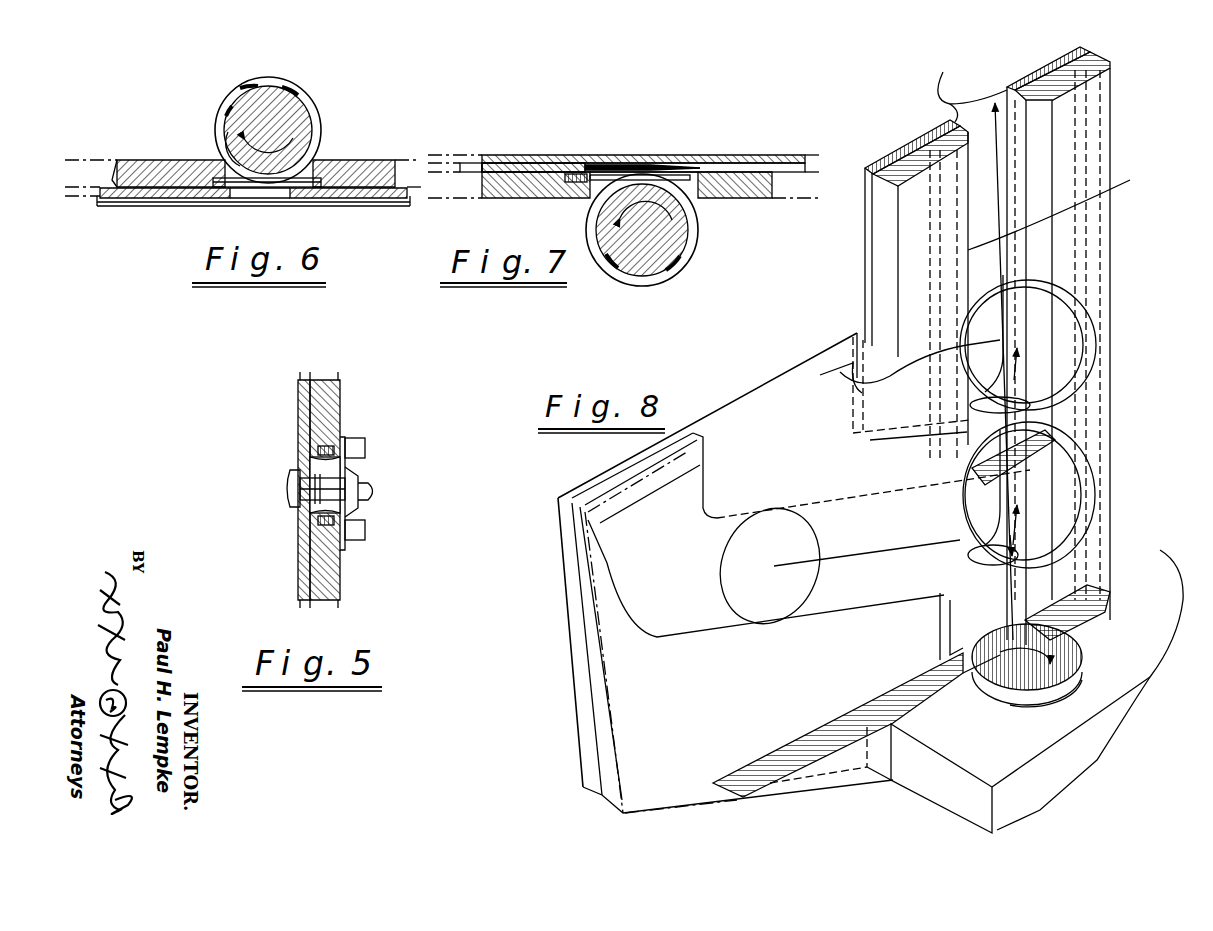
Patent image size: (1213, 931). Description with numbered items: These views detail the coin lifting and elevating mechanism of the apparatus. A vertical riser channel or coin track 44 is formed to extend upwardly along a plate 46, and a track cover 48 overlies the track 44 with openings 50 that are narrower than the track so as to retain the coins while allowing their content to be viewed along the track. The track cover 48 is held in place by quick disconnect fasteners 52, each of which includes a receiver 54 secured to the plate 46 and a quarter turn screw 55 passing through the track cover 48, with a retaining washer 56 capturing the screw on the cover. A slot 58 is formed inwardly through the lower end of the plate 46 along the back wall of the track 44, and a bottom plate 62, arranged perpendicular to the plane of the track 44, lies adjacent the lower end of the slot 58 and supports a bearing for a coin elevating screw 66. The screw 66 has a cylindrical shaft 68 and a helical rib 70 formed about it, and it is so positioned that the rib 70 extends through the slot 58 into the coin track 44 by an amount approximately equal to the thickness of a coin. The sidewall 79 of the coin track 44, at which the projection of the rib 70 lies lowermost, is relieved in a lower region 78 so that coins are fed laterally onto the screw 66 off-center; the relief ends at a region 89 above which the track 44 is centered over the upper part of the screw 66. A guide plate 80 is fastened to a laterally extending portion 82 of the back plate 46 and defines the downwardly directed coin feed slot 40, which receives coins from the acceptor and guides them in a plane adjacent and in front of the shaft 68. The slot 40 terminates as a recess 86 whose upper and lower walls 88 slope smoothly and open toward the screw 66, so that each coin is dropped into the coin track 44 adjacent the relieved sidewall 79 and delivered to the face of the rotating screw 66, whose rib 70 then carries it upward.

In FIG. 7, the coin feed slot 40 is at (733, 165).
In FIG. 8, the coin feed slot 40 is at (692, 632).
In FIG. 6, the coin track 44 is at (320, 168).
In FIG. 8, the coin track 44 is at (1020, 60).
In FIG. 6, the plate 46 is at (365, 166).
In FIG. 7, the plate 46 is at (740, 196).
In FIG. 5, the plate 46 is at (325, 402).
In FIG. 8, the plate 46 is at (878, 292).
In FIG. 6, the track cover 48 is at (355, 200).
In FIG. 7, the track cover 48 is at (468, 172).
In FIG. 5, the track cover 48 is at (300, 427).
In FIG. 8, the track cover 48 is at (905, 165).
In FIG. 6, the openings 50 is at (298, 196).
In FIG. 8, the openings 50 is at (971, 89).
In FIG. 5, the quick disconnect fasteners 52 is at (288, 496).
In FIG. 5, the receiver 54 is at (358, 475).
In FIG. 5, the quarter turn screw 55 is at (372, 489).
In FIG. 5, the retaining washer 56 is at (312, 520).
In FIG. 6, the slot 58 is at (235, 140).
In FIG. 7, the slot 58 is at (600, 190).
In FIG. 8, the slot 58 is at (1059, 211).
In FIG. 8, the bottom plate 62 is at (935, 780).
In FIG. 6, the coin elevating screw 66 is at (310, 84).
In FIG. 7, the coin elevating screw 66 is at (618, 282).
In FIG. 8, the coin elevating screw 66 is at (993, 700).
In FIG. 6, the cylindrical shaft 68 is at (228, 108).
In FIG. 7, the cylindrical shaft 68 is at (642, 262).
In FIG. 8, the cylindrical shaft 68 is at (985, 690).
In FIG. 6, the helical rib 70 is at (318, 116).
In FIG. 7, the helical rib 70 is at (688, 255).
In FIG. 8, the helical rib 70 is at (1092, 492).
In FIG. 8, the lower region 78 is at (1102, 392).
In FIG. 7, the sidewall 79 is at (575, 184).
In FIG. 8, the sidewall 79 is at (953, 612).
In FIG. 7, the guide plate 80 is at (707, 155).
In FIG. 8, the guide plate 80 is at (575, 625).
In FIG. 7, the laterally extending portion 82 is at (795, 202).
In FIG. 8, the laterally extending portion 82 is at (612, 805).
In FIG. 8, the recess 86 is at (996, 530).
In FIG. 7, the upper and lower walls 88 is at (618, 165).
In FIG. 8, the upper and lower walls 88 is at (1030, 470).
In FIG. 8, the region 89 is at (1043, 163).